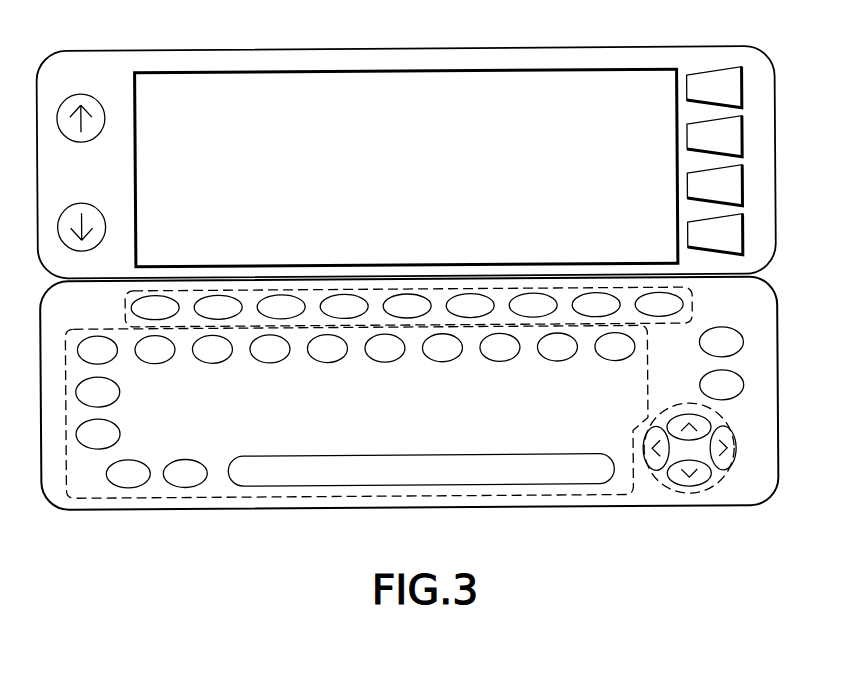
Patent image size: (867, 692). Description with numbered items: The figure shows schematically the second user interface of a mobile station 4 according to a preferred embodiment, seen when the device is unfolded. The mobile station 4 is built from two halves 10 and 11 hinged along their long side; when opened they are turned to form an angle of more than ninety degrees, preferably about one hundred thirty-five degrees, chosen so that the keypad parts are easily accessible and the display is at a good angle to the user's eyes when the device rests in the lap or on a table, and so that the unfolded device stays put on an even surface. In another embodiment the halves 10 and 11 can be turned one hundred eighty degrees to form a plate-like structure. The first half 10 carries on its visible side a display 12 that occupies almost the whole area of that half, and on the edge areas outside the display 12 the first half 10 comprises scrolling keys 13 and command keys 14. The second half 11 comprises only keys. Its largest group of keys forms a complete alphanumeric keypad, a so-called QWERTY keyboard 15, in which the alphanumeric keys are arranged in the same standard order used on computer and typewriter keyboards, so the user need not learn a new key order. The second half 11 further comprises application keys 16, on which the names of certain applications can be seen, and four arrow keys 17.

The mobile station 4 is at (431, 281).
The first half 10 is at (423, 143).
The second half 11 is at (433, 416).
The display 12 is at (460, 86).
The scrolling keys 13 is at (104, 214).
The command keys 14 is at (688, 236).
The QWERTY keyboard 15 is at (270, 498).
The application keys 16 is at (692, 303).
The arrow keys 17 is at (710, 487).